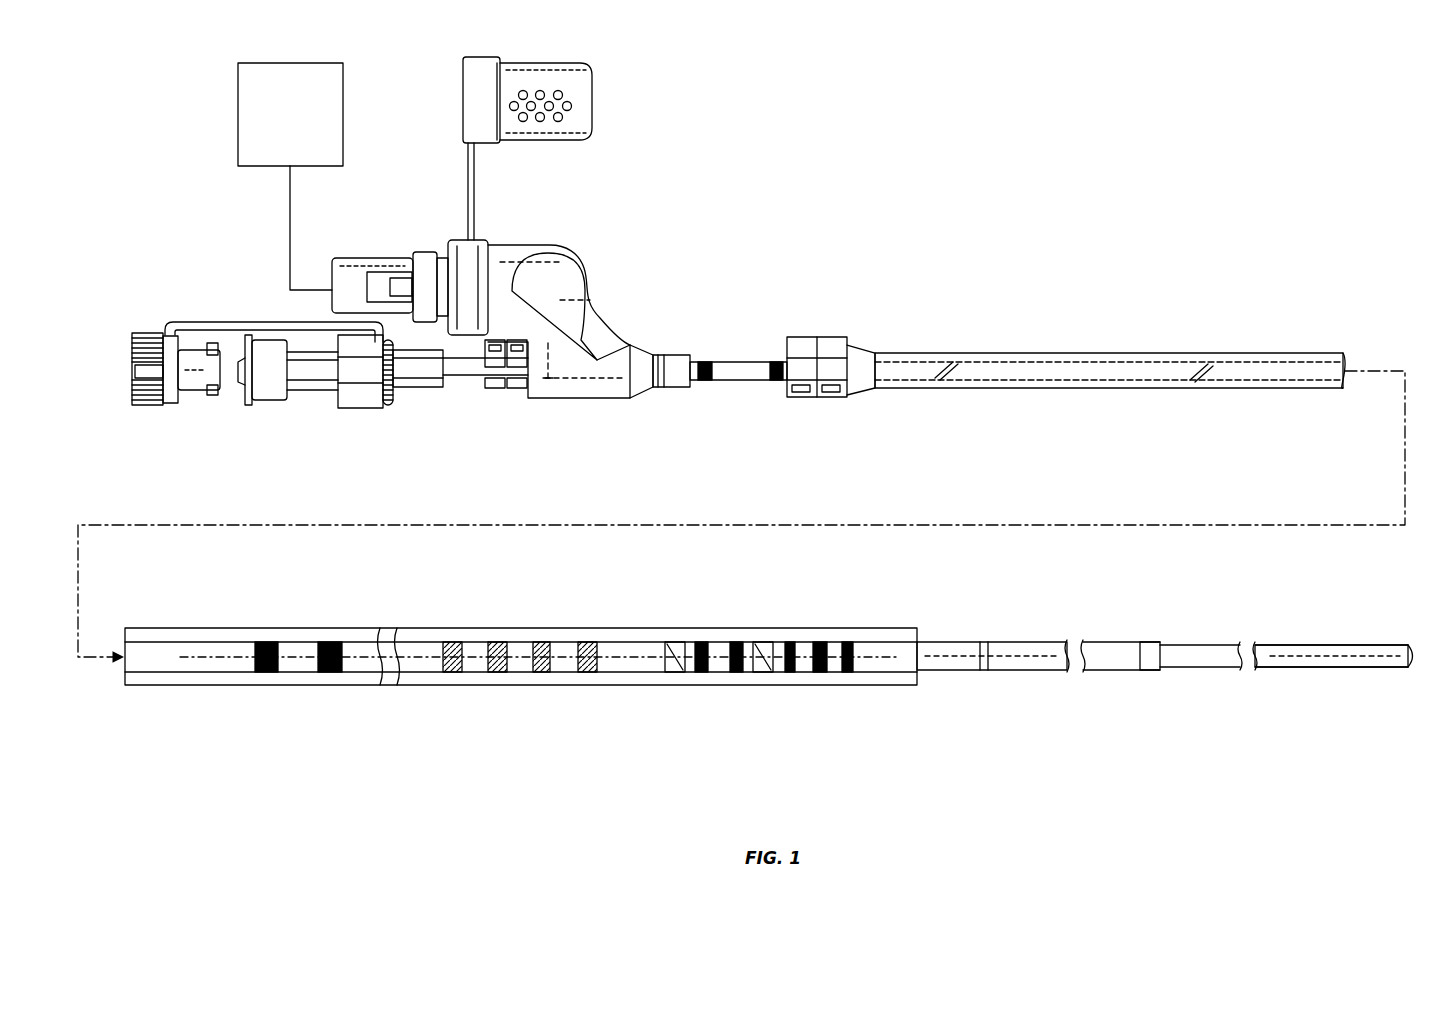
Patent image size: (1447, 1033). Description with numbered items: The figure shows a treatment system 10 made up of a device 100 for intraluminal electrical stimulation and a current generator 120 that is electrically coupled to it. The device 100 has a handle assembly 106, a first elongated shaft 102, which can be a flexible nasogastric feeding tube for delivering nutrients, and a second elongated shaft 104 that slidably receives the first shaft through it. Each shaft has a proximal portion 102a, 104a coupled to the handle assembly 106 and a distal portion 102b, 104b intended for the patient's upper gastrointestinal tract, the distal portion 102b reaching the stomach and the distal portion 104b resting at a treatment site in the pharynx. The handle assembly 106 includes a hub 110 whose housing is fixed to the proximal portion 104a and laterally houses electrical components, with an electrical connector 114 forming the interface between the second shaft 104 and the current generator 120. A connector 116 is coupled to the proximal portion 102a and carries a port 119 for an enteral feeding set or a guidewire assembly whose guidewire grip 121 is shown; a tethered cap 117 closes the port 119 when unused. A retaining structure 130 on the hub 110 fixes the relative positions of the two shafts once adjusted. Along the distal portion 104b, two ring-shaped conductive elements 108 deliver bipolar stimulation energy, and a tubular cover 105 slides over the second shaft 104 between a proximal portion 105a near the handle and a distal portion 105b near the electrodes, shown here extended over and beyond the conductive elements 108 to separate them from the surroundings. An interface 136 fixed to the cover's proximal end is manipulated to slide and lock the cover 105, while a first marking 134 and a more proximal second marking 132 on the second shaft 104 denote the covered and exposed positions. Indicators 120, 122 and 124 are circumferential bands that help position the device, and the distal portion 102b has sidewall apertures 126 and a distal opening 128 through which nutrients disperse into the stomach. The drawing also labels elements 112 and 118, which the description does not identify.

The treatment system 10 is at (193, 146).
The device 100 is at (873, 287).
The first elongated shaft 102 is at (470, 375).
The proximal portion of first shaft 102a is at (380, 410).
The distal portion of first shaft 102b is at (1383, 682).
The second elongated shaft 104 is at (749, 360).
The proximal portion of second shaft 104a is at (538, 400).
The distal portion of second shaft 104b is at (1148, 682).
The cover 105 is at (1075, 355).
The proximal portion of cover 105a is at (890, 333).
The distal portion of cover 105b is at (900, 692).
The handle assembly 106 is at (657, 270).
The conductive elements 108 is at (674, 675).
The hub 110 is at (572, 250).
The lumen 112 is at (560, 386).
The electrical connector 114 is at (372, 258).
The connector 116 is at (396, 400).
The cap 117 is at (166, 408).
The electrical connector 118 is at (533, 128).
The port 119 is at (333, 360).
The current generator 120 is at (276, 123).
The guidewire grip 121 is at (300, 404).
The indicator 122 is at (518, 692).
The indicator 124 is at (300, 692).
The apertures 126 is at (1302, 642).
The opening 128 is at (1417, 656).
The retaining structure 130 is at (510, 393).
The second marking 132 is at (706, 388).
The first marking 134 is at (775, 388).
The interface 136 is at (832, 400).